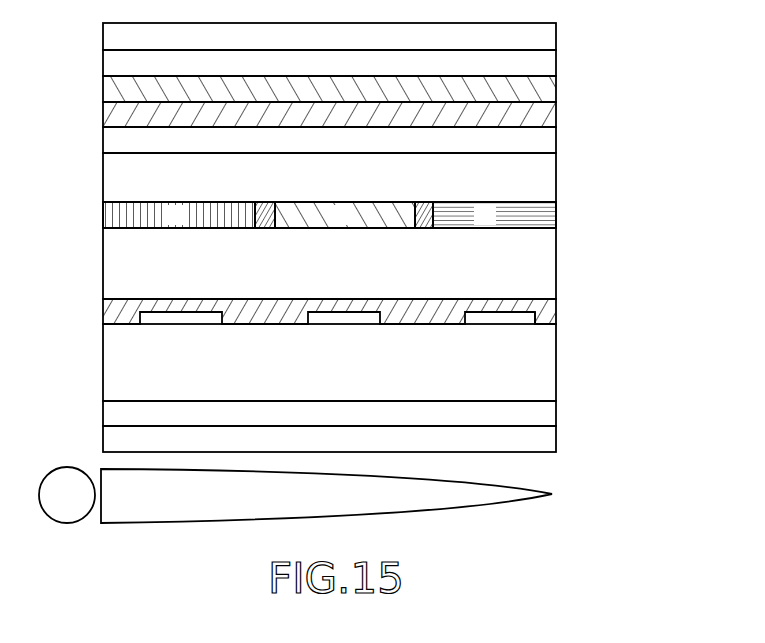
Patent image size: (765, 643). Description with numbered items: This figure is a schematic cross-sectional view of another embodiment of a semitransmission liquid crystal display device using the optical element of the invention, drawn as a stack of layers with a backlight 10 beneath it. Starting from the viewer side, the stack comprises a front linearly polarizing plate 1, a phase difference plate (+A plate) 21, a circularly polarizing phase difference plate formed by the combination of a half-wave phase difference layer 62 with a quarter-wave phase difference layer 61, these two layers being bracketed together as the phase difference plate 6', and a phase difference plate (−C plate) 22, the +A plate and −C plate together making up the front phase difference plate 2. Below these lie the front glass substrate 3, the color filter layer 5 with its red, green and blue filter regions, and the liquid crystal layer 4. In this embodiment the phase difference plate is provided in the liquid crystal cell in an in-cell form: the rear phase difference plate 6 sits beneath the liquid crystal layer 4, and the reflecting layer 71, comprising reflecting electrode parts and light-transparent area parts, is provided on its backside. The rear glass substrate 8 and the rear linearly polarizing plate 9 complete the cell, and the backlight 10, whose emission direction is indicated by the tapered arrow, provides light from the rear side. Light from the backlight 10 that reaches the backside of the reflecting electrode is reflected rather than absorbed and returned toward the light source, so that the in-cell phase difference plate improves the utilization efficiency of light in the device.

The front linearly polarizing plate 1 is at (556, 33).
The phase difference plate (+A plate) 21 is at (556, 63).
The half-wave phase difference layer 62 is at (556, 91).
The quarter-wave phase difference layer 61 is at (556, 117).
The light-emitting layer 6' is at (393, 104).
The phase difference plate (−C plate) 22 is at (556, 143).
The front glass substrate 3 is at (556, 180).
The color filter layer 5 is at (556, 210).
The liquid crystal layer 4 is at (556, 253).
The rear phase difference plate 6 is at (368, 302).
The reflecting layer 71 is at (556, 318).
The rear glass substrate 8 is at (556, 363).
The front phase difference plate 2 is at (556, 412).
The rear linearly polarizing plate 9 is at (556, 437).
The backlight 10 is at (552, 494).